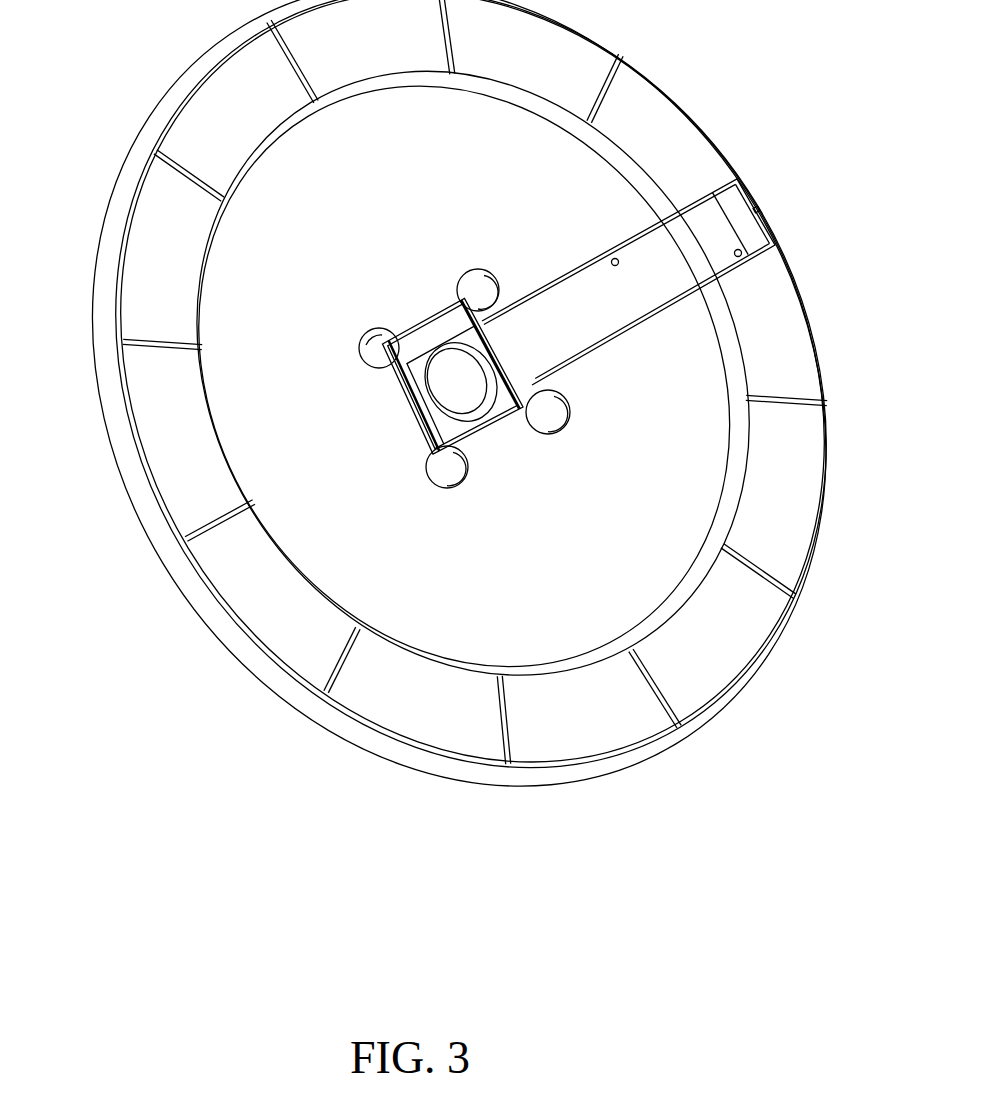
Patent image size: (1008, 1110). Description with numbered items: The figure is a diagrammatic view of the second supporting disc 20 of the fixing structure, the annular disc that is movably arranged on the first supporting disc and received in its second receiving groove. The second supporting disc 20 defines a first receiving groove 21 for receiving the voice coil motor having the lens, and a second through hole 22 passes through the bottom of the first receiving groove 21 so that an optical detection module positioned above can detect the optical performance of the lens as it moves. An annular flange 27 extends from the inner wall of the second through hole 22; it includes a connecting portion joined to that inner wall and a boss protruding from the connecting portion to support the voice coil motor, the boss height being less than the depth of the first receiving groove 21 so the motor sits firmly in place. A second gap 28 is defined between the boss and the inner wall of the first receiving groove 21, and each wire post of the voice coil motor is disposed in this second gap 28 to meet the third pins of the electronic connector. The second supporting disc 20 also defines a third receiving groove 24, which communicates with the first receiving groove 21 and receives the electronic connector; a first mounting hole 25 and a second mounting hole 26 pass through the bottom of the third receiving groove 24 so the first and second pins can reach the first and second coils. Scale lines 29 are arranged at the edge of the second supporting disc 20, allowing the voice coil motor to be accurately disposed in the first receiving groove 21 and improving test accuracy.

The second supporting disc 20 is at (130, 472).
The first receiving groove 21 is at (460, 287).
The second through hole 22 is at (452, 382).
The third receiving groove 24 is at (698, 227).
The first mounting hole 25 is at (623, 264).
The second mounting hole 26 is at (742, 248).
The annular flange 27 is at (521, 405).
The second gap 28 is at (478, 436).
The scale lines 29 is at (678, 724).